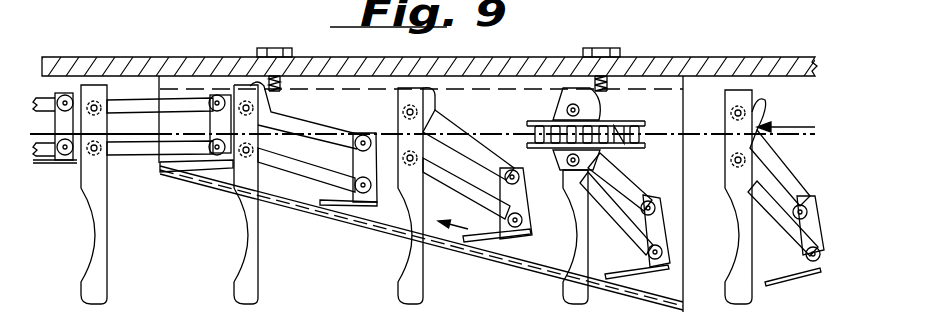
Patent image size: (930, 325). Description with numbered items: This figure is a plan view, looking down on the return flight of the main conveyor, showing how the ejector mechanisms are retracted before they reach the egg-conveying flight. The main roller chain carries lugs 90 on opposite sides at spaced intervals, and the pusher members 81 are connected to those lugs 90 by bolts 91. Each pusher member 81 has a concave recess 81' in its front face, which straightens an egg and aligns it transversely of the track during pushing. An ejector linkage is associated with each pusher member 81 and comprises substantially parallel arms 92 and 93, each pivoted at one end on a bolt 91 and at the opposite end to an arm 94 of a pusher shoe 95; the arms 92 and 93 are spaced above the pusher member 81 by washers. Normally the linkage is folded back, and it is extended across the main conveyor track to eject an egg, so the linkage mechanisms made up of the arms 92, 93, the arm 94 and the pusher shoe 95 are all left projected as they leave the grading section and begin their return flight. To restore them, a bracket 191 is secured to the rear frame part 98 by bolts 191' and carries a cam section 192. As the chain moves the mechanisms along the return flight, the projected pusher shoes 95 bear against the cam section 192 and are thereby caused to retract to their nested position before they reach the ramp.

The rear frame part 98 is at (681, 58).
The bolts 191' is at (431, 56).
The bracket 191 is at (711, 200).
The cam section 192 is at (524, 256).
The pusher member 81 is at (276, 194).
The recess 81' is at (217, 235).
The bolt 91 is at (403, 117).
The lugs 90 is at (557, 112).
The arm 93 is at (484, 160).
The arm 92 is at (473, 183).
The arm of pusher shoe 94 is at (353, 160).
The pusher shoe 95 is at (42, 164).